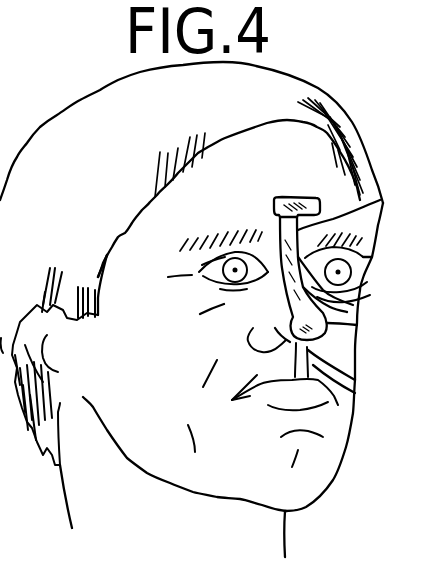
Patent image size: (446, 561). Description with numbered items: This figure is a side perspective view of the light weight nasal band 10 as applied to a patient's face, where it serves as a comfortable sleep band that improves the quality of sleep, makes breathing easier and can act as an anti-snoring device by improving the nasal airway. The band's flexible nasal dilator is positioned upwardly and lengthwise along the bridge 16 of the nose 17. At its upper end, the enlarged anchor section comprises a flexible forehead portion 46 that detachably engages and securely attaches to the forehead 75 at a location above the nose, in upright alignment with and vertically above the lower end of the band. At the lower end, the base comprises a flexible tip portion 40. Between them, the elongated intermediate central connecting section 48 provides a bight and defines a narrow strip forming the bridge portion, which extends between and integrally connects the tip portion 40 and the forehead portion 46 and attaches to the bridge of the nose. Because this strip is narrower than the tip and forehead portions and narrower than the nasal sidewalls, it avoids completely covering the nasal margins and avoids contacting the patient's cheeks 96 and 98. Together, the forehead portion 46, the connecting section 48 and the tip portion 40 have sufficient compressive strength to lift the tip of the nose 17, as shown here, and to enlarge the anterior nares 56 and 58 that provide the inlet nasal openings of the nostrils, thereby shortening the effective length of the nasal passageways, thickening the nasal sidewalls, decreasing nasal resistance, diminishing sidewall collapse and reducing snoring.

The nasal band 10 is at (365, 292).
The bridge 16 is at (368, 257).
The nose 17 is at (353, 305).
The tip portion 40 is at (355, 393).
The forehead portion 46 is at (318, 206).
The intermediate central connecting section 48 is at (380, 200).
The anterior nares 56 is at (275, 328).
The anterior nares 58 is at (355, 380).
The forehead 75 is at (308, 170).
The cheek 96 is at (207, 312).
The cheek 98 is at (357, 325).